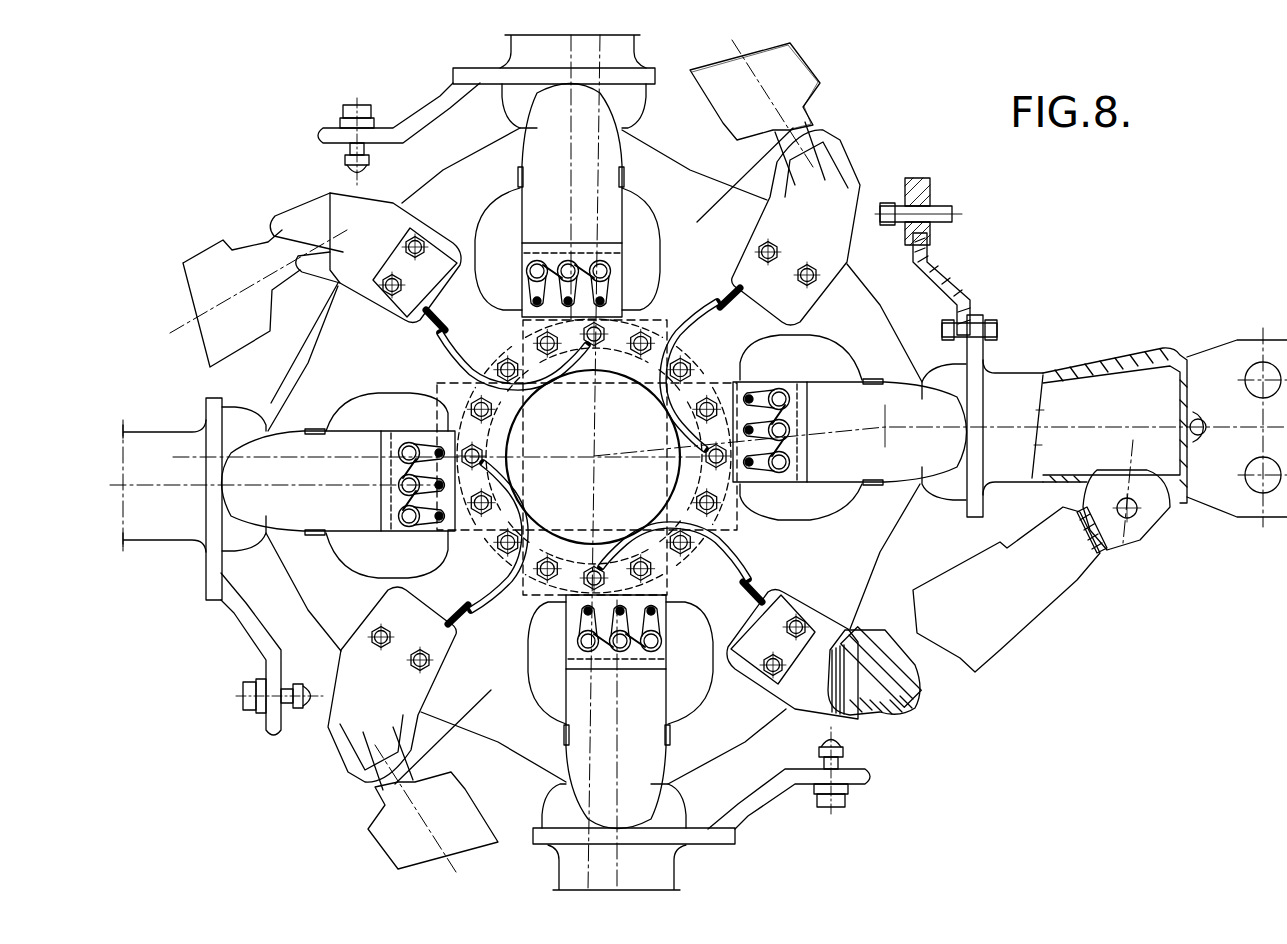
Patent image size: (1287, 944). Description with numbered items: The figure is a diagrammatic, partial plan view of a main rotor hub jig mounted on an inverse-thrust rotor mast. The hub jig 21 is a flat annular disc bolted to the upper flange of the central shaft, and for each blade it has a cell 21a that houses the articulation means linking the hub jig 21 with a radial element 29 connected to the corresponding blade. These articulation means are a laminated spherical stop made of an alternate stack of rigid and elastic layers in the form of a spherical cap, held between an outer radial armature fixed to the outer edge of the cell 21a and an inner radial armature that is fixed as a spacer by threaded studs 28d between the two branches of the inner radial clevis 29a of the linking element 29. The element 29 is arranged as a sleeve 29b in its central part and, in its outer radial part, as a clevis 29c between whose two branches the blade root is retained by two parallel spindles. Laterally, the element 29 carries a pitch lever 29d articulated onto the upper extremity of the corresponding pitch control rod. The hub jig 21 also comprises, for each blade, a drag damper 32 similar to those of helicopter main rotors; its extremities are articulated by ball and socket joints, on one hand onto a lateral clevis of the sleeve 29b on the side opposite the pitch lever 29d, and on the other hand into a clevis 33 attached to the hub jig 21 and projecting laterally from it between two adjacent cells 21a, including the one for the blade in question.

The hub jig 21 is at (793, 132).
The cell 21a is at (813, 494).
The threaded studs 28d is at (773, 392).
The radial element 29 is at (1026, 365).
The inner radial clevis 29a is at (842, 392).
The sleeve 29b is at (1115, 366).
The clevis 29c is at (1216, 388).
The pitch lever 29d is at (933, 270).
The drag damper 32 is at (1007, 618).
The clevis 33 is at (865, 716).